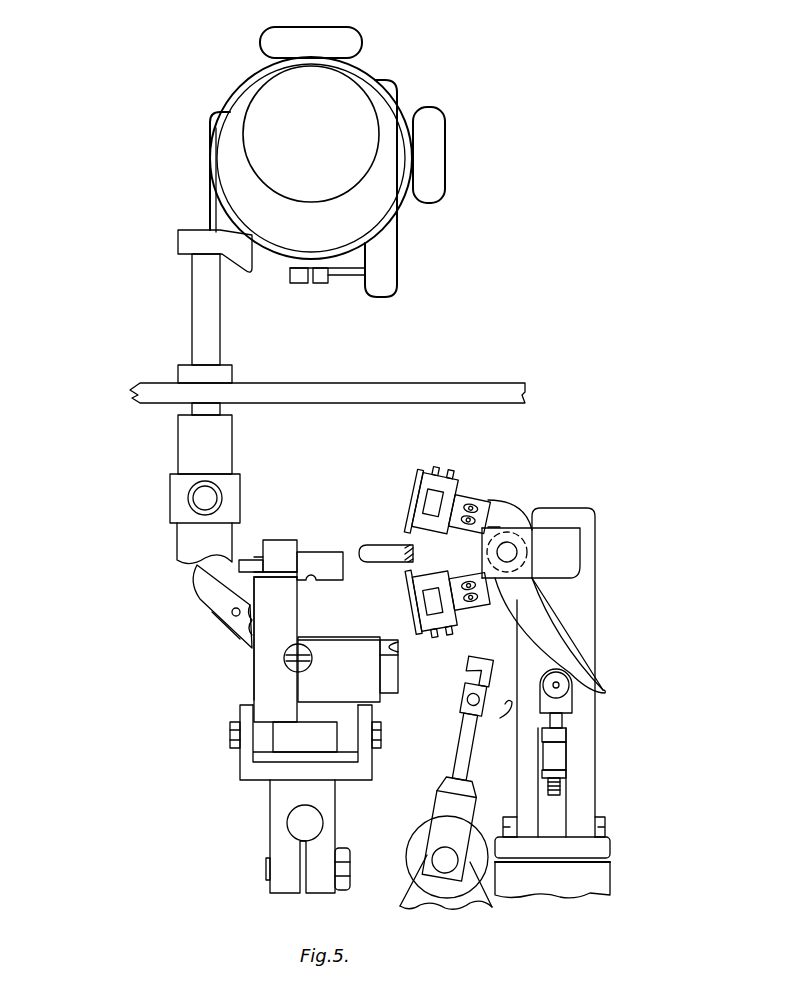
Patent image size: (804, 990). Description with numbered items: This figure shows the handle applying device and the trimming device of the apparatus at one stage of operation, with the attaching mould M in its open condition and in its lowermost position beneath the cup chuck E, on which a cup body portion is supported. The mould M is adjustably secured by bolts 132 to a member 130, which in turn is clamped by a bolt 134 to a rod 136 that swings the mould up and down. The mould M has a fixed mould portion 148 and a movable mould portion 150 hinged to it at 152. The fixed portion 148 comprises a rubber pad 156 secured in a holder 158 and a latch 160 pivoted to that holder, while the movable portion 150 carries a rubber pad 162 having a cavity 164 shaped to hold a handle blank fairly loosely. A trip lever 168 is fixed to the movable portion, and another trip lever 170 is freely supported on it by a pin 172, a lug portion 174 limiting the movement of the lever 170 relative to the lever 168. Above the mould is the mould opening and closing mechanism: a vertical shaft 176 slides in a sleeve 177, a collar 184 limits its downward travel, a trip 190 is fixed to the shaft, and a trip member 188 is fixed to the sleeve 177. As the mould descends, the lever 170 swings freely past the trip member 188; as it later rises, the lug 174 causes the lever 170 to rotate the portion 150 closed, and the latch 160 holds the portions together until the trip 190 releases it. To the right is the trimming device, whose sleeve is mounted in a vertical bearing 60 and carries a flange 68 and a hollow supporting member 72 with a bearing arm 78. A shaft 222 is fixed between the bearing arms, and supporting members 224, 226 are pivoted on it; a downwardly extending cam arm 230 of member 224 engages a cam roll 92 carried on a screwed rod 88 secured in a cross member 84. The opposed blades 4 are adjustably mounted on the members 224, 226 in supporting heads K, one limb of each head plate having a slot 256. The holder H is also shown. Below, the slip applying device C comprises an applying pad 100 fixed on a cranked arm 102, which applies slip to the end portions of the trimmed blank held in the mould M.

The cup chuck E is at (424, 49).
The trip 190 is at (186, 242).
The vertical shaft 176 is at (198, 287).
The collar 184 is at (180, 375).
The sleeve 177 is at (183, 447).
The trip member 188 is at (197, 497).
The trip lever 170 is at (208, 600).
The pin 172 is at (233, 613).
The lug portion 174 is at (243, 631).
The fixed mould portion 148 is at (268, 645).
The trip lever 168 is at (254, 607).
The rubber pad 156 is at (278, 548).
The latch 160 is at (320, 562).
The holder 158 is at (288, 608).
The movable mould portion 150 is at (342, 668).
The rubber pad 162 is at (327, 645).
The cavity 164 is at (399, 650).
The hinge 152 is at (300, 668).
The member 130 is at (245, 772).
The bolts 132 is at (230, 741).
The rod 136 is at (294, 823).
The bolt 134 is at (352, 870).
The supporting head K is at (388, 495).
The blade 4 is at (408, 536).
The holder H is at (378, 548).
The supporting member 224 is at (507, 512).
The supporting member 226 is at (470, 612).
The shaft 222 is at (517, 552).
The bearing arm 78 is at (574, 553).
The cam arm 230 is at (540, 617).
The hollow supporting member 72 is at (585, 732).
The slot 256 is at (511, 705).
The cam roll 92 is at (572, 684).
The cross member 84 is at (558, 758).
The screwed rod 88 is at (561, 790).
The flange 68 is at (603, 852).
The vertical bearing 60 is at (600, 882).
The slip applying device C is at (422, 770).
The applying pad 100 is at (463, 660).
The cranked arm 102 is at (470, 750).
The attaching mould M is at (220, 673).